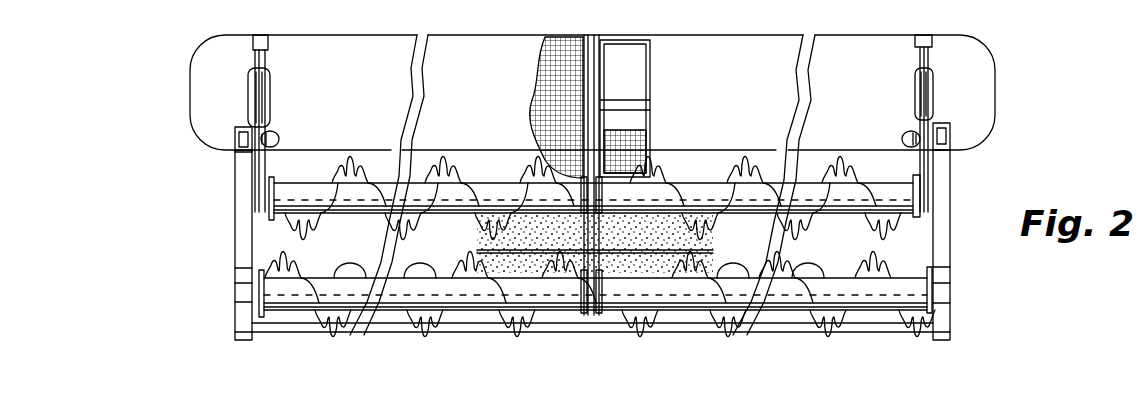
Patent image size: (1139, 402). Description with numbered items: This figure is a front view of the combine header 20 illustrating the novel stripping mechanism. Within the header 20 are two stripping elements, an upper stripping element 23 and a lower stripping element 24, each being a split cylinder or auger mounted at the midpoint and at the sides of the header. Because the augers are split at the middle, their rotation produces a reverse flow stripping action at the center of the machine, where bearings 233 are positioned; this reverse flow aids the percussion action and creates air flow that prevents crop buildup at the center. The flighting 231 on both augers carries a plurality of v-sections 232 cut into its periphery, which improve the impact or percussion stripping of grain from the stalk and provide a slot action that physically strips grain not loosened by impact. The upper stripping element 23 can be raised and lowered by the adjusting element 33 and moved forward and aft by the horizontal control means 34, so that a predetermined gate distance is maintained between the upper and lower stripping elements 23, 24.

The combine header 20 is at (1020, 125).
The upper stripping element 23 is at (310, 175).
The lower stripping element 24 is at (317, 264).
The adjusting element 33 is at (248, 95).
The horizontal control means 34 is at (280, 138).
The flighting 231 is at (866, 224).
The v-section 232 is at (873, 132).
The bearing 233 is at (630, 193).